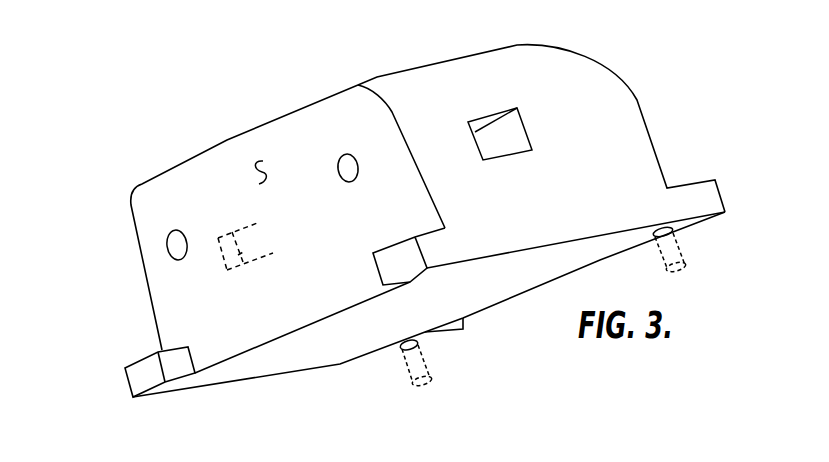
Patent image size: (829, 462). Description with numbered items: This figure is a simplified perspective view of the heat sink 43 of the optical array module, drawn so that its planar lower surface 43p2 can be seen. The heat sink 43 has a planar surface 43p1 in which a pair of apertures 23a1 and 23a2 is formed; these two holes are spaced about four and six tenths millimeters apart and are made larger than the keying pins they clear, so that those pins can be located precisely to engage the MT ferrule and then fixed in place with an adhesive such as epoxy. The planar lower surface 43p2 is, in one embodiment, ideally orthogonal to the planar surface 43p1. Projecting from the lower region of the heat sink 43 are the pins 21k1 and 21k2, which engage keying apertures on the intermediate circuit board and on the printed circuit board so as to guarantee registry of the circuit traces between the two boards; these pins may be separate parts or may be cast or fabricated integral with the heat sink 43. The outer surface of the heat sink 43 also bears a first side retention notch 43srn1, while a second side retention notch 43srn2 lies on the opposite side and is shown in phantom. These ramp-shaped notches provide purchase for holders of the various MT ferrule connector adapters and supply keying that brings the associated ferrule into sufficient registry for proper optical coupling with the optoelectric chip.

The heat sink 43 is at (467, 67).
The planar surface 43p1 is at (256, 170).
The planar lower surface 43p2 is at (378, 326).
The first side retention notch 43srn1 is at (503, 135).
The second side retention notch 43srn2 is at (227, 268).
The aperture 23a1 is at (341, 158).
The aperture 23a2 is at (179, 230).
The pin 21k1 is at (682, 252).
The pin 21k2 is at (428, 363).